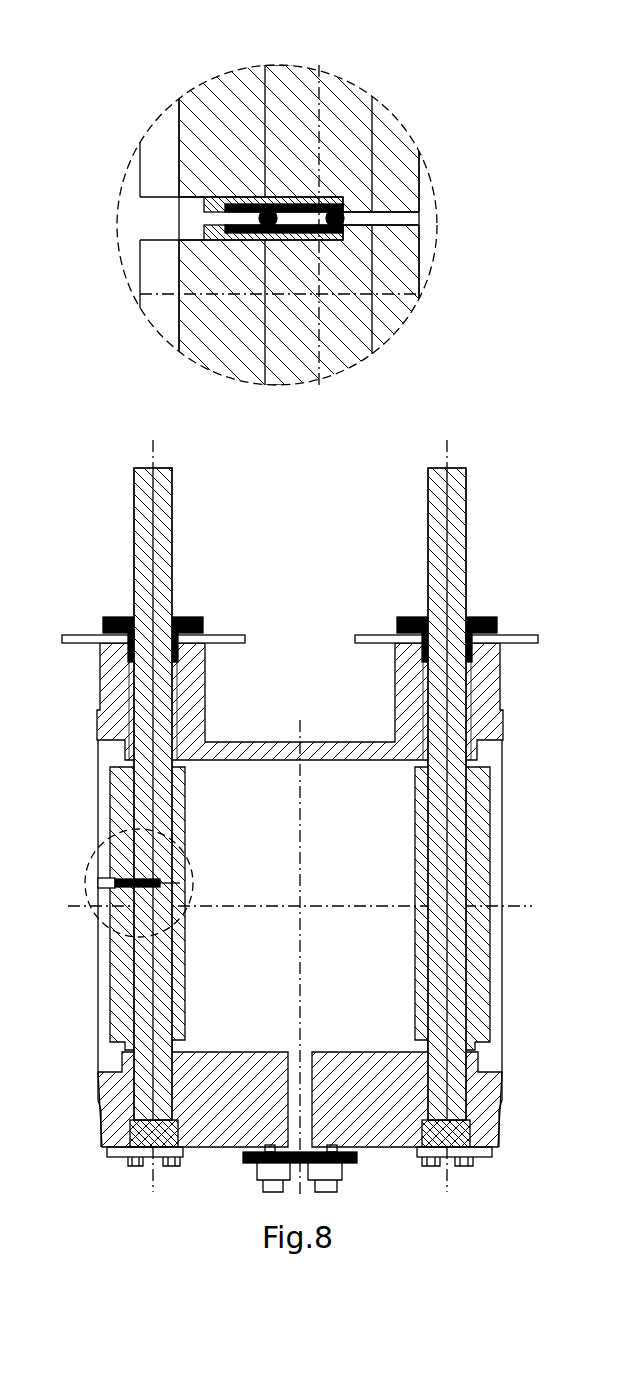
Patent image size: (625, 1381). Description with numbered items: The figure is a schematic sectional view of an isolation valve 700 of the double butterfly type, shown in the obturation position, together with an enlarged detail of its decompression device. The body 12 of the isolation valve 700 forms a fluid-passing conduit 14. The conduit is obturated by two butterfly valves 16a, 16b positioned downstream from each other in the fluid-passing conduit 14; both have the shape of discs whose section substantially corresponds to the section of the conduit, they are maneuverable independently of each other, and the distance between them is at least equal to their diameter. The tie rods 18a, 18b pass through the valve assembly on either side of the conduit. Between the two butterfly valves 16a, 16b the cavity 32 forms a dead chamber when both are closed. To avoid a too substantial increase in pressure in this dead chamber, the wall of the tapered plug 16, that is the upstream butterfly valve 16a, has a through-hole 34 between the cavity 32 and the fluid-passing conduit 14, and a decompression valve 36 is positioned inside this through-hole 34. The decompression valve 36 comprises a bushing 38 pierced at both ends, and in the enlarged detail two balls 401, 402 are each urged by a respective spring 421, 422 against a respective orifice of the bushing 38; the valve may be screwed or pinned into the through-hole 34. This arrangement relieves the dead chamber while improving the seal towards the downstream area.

The isolation valve 700 is at (108, 550).
The body 12 is at (388, 1127).
The fluid-passing conduit 14 is at (122, 258).
The tapered plug 16 is at (383, 333).
The upstream butterfly valve 16a is at (127, 1048).
The downstream butterfly valve 16b is at (478, 1000).
The first tie rod 18a is at (165, 552).
The second tie rod 18b is at (457, 552).
The cavity 32 is at (430, 232).
The through-hole 34 is at (413, 217).
The decompression valve 36 is at (280, 158).
The bushing 38 is at (282, 240).
The ball 401 is at (340, 203).
The ball 402 is at (222, 196).
The spring 421 is at (308, 200).
The spring 422 is at (262, 197).